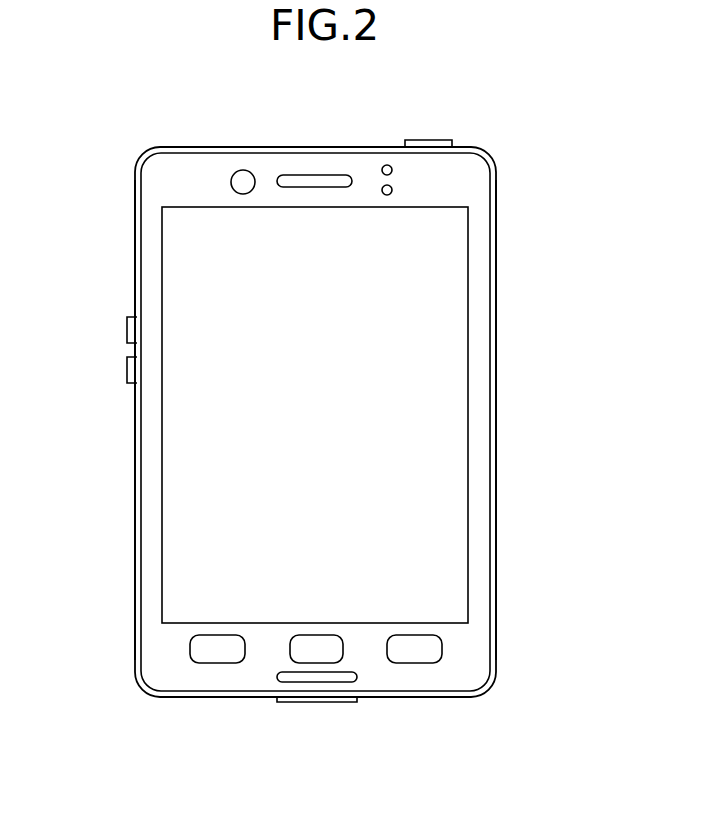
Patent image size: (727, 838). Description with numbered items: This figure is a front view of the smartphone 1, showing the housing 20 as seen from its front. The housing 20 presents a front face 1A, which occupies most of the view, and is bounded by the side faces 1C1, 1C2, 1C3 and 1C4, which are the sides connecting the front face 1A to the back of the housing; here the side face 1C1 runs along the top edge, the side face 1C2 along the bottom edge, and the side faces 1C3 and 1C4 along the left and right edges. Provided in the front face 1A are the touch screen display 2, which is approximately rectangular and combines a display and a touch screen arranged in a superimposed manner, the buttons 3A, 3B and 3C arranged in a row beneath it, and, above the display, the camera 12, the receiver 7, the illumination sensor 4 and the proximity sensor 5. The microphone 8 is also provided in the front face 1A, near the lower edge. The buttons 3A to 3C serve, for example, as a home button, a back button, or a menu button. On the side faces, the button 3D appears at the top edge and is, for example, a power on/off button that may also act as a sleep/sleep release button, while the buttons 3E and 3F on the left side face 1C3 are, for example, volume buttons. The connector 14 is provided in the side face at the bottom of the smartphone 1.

The smartphone 1 is at (474, 119).
The front face 1A is at (150, 483).
The side face 1C1 is at (277, 147).
The side face 1C2 is at (177, 698).
The side face 1C3 is at (135, 555).
The side face 1C4 is at (497, 500).
The housing 20 is at (137, 275).
The touch screen display 2 is at (401, 365).
The button 3A is at (220, 664).
The button 3B is at (289, 649).
The button 3C is at (417, 664).
The button 3D is at (427, 140).
The button 3E is at (127, 331).
The button 3F is at (127, 370).
The illumination sensor 4 is at (387, 165).
The proximity sensor 5 is at (393, 190).
The receiver 7 is at (312, 175).
The microphone 8 is at (355, 677).
The camera 12 is at (245, 169).
The connector 14 is at (317, 702).